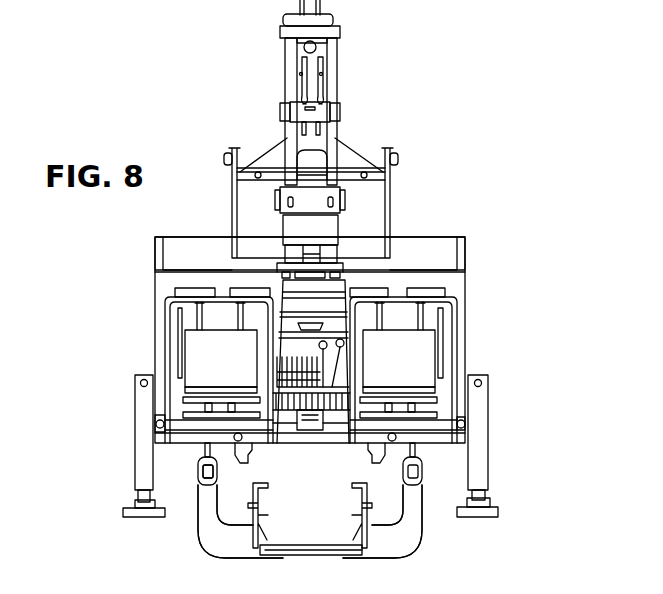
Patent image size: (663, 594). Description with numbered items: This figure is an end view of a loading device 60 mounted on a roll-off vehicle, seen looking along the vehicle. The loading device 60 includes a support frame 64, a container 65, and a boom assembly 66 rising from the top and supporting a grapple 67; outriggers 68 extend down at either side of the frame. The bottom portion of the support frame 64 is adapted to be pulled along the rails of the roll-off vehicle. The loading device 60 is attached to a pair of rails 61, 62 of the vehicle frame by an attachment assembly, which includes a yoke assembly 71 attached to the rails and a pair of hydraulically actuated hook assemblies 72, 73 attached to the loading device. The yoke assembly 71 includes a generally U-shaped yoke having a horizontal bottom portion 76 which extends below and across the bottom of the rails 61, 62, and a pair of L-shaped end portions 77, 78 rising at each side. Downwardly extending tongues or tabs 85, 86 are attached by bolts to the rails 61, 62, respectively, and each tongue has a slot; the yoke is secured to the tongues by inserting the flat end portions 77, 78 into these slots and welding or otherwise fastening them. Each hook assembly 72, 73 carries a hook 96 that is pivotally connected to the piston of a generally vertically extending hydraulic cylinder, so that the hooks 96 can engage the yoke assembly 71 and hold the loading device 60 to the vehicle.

The loading device 60 is at (442, 237).
The rail 61 is at (267, 485).
The rail 62 is at (357, 483).
The support frame 64 is at (240, 463).
The container 65 is at (155, 247).
The boom assembly 66 is at (348, 83).
The grapple 67 is at (390, 213).
The outriggers 68 is at (135, 397).
The yoke assembly 71 is at (436, 527).
The hook assembly 72 is at (190, 455).
The hook assembly 73 is at (432, 455).
The horizontal bottom portion 76 is at (290, 545).
The L-shaped end portion 77 is at (200, 527).
The L-shaped end portion 78 is at (425, 495).
The tongue 85 is at (250, 535).
The tongue 86 is at (373, 537).
The hook 96 is at (203, 468).